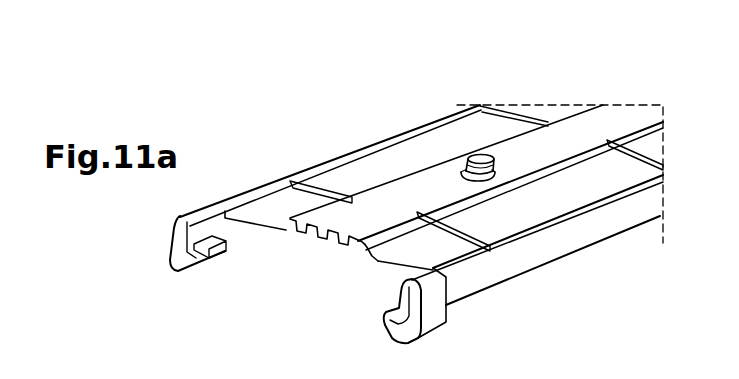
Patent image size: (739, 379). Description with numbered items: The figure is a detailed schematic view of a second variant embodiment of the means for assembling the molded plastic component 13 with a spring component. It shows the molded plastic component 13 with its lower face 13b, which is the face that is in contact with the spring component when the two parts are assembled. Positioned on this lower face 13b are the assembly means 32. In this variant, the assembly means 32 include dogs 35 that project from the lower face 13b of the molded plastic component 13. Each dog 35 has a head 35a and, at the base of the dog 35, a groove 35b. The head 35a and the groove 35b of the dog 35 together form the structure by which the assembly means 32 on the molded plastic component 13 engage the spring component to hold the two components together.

The molded plastic component 13 is at (330, 140).
The lower face 13b is at (366, 217).
The dog 35 is at (492, 146).
The head 35a is at (470, 152).
The groove 35b is at (473, 184).
The assembly means 32 is at (510, 152).